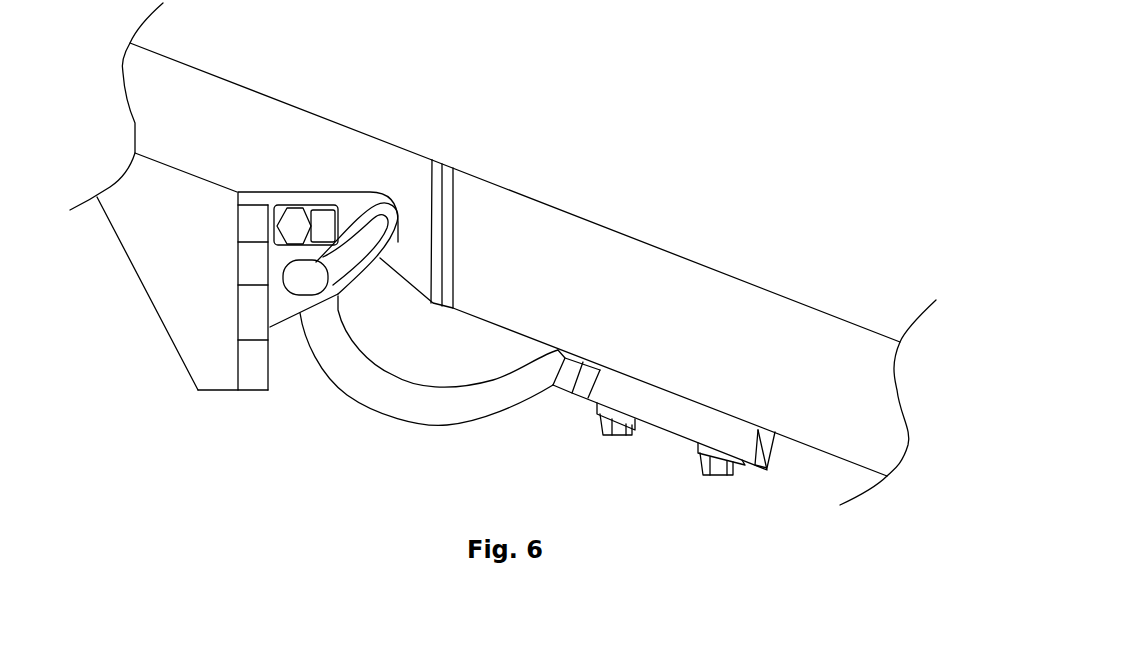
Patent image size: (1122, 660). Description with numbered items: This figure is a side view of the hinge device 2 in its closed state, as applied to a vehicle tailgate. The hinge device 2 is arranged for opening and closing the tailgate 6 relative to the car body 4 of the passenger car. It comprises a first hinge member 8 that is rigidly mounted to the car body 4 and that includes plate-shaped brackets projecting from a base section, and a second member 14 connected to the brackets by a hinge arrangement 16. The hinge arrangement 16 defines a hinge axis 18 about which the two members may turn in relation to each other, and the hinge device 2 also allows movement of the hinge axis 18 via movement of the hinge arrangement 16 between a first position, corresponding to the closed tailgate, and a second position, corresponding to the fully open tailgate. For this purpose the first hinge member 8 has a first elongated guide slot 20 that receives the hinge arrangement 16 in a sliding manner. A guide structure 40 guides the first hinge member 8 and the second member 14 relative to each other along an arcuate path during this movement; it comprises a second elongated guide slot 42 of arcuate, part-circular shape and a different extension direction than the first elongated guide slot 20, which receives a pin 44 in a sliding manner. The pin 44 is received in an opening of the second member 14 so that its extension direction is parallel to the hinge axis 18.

The hinge device 2 is at (195, 425).
The car body 4 is at (223, 137).
The tailgate 6 is at (727, 333).
The first hinge member 8 is at (252, 367).
The second member 14 is at (485, 403).
The hinge arrangement 16 is at (313, 210).
The hinge axis 18 is at (296, 222).
The first elongated guide slot 20 is at (325, 207).
The guide structure 40 is at (352, 296).
The second elongated guide slot 42 is at (387, 263).
The pin 44 is at (303, 280).